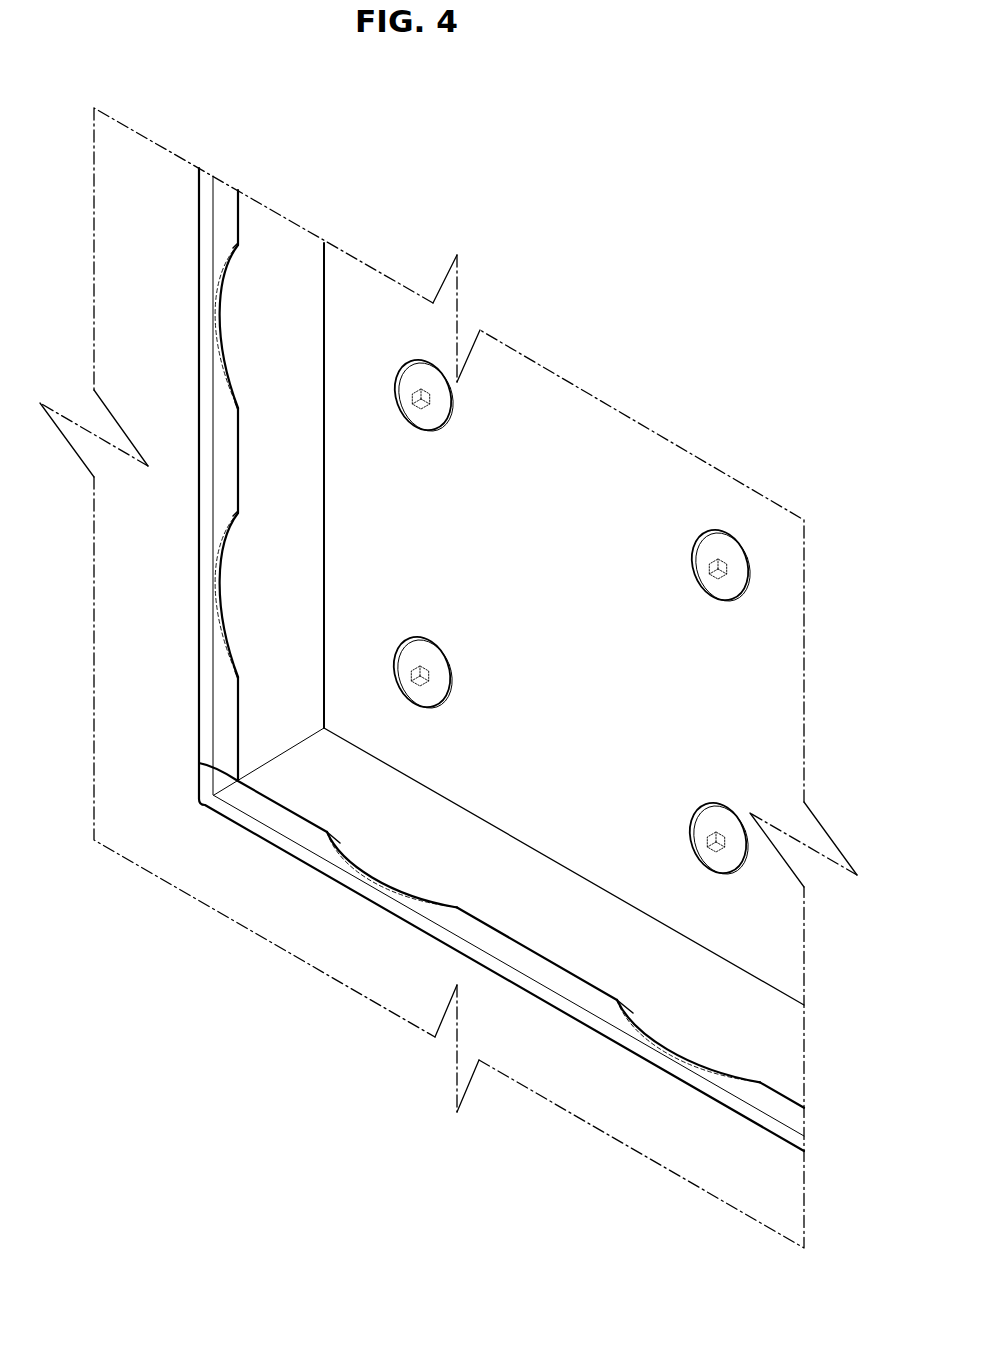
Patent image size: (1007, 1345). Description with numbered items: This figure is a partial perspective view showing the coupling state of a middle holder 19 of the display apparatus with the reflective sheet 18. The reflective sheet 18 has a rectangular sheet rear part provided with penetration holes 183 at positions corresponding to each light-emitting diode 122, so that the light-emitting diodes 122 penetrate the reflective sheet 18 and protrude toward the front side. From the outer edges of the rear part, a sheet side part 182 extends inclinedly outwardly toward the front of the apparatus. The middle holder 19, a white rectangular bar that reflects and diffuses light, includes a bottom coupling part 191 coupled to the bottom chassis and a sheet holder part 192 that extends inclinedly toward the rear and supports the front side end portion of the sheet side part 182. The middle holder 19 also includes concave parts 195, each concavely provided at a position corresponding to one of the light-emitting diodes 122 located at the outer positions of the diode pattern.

The reflective sheet 18 is at (590, 442).
The middle holder 19 is at (454, 659).
The bottom coupling part 191 is at (207, 358).
The sheet holder part 192 is at (753, 1095).
The sheet side part 182 is at (233, 624).
The concave part 195 is at (221, 292).
The penetration hole 183 is at (450, 421).
The light-emitting diode 122 is at (413, 367).